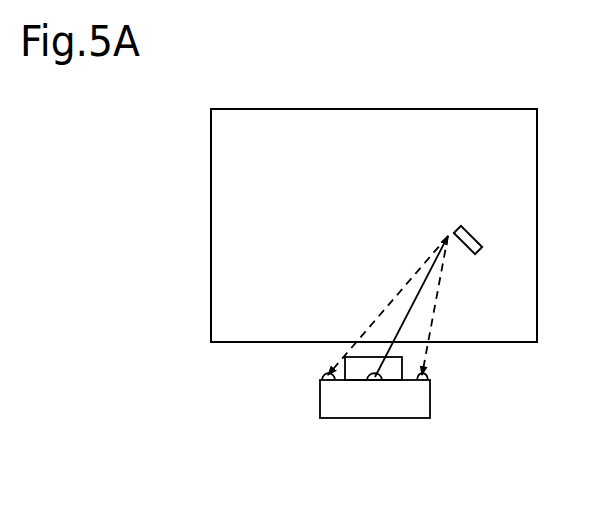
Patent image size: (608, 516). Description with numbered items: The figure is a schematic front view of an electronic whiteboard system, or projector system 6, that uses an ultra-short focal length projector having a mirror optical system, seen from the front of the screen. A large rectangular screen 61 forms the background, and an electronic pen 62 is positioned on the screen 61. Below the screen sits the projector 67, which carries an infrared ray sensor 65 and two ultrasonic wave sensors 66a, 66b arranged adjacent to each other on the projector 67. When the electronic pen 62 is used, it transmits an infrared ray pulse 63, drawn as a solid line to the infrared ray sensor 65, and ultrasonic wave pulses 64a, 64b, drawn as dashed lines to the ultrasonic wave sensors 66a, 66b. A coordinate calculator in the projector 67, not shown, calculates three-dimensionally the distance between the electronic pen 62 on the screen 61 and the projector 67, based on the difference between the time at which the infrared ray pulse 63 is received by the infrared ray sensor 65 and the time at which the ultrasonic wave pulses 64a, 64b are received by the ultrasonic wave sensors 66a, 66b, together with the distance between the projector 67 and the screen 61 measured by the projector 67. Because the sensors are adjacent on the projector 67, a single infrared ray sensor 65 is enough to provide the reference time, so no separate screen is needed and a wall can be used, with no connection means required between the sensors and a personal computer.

The optical position detection device 6 is at (393, 88).
The screen 61 is at (484, 115).
The electronic pen 62 is at (480, 231).
The infrared ray pulse 63 is at (428, 262).
The ultrasonic wave pulse 64a is at (399, 283).
The ultrasonic wave pulse 64b is at (442, 282).
The infrared ray sensor 65 is at (378, 381).
The ultrasonic wave sensor 66a is at (335, 381).
The ultrasonic wave sensor 66b is at (432, 384).
The projector 67 is at (316, 405).